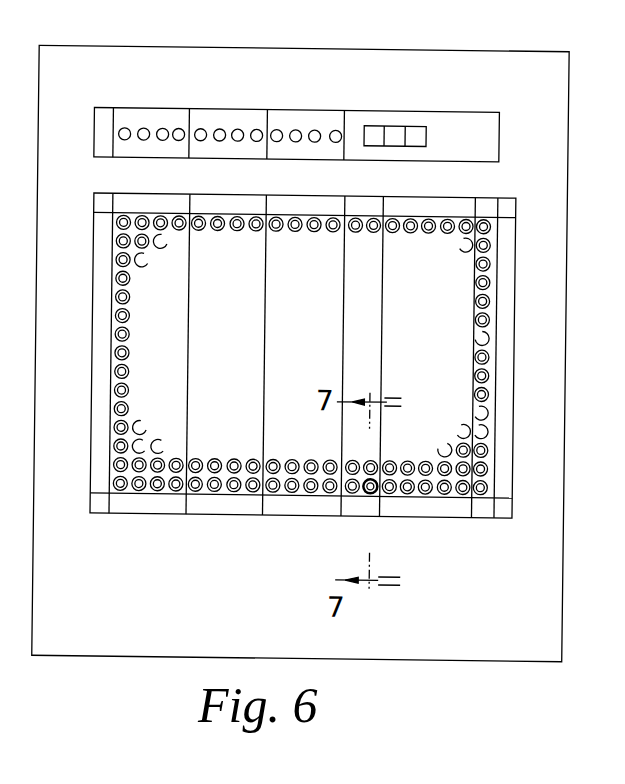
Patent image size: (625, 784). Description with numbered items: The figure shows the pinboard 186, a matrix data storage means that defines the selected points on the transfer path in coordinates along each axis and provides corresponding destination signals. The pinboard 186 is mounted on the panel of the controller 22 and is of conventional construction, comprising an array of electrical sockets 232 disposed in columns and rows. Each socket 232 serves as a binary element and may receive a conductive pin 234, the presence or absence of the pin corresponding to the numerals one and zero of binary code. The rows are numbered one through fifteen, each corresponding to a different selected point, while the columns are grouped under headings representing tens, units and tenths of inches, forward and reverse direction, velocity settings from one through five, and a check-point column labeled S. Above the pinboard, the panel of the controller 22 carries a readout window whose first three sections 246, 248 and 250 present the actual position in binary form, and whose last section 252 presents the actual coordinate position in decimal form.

The controller 22 is at (436, 50).
The first section of readout window 246 is at (132, 147).
The second section of readout window 248 is at (199, 119).
The third section of readout window 250 is at (332, 152).
The last section of readout window 252 is at (424, 126).
The pinboard 186 is at (349, 344).
The electrical sockets 232 is at (147, 247).
The conductive pin 234 is at (374, 489).